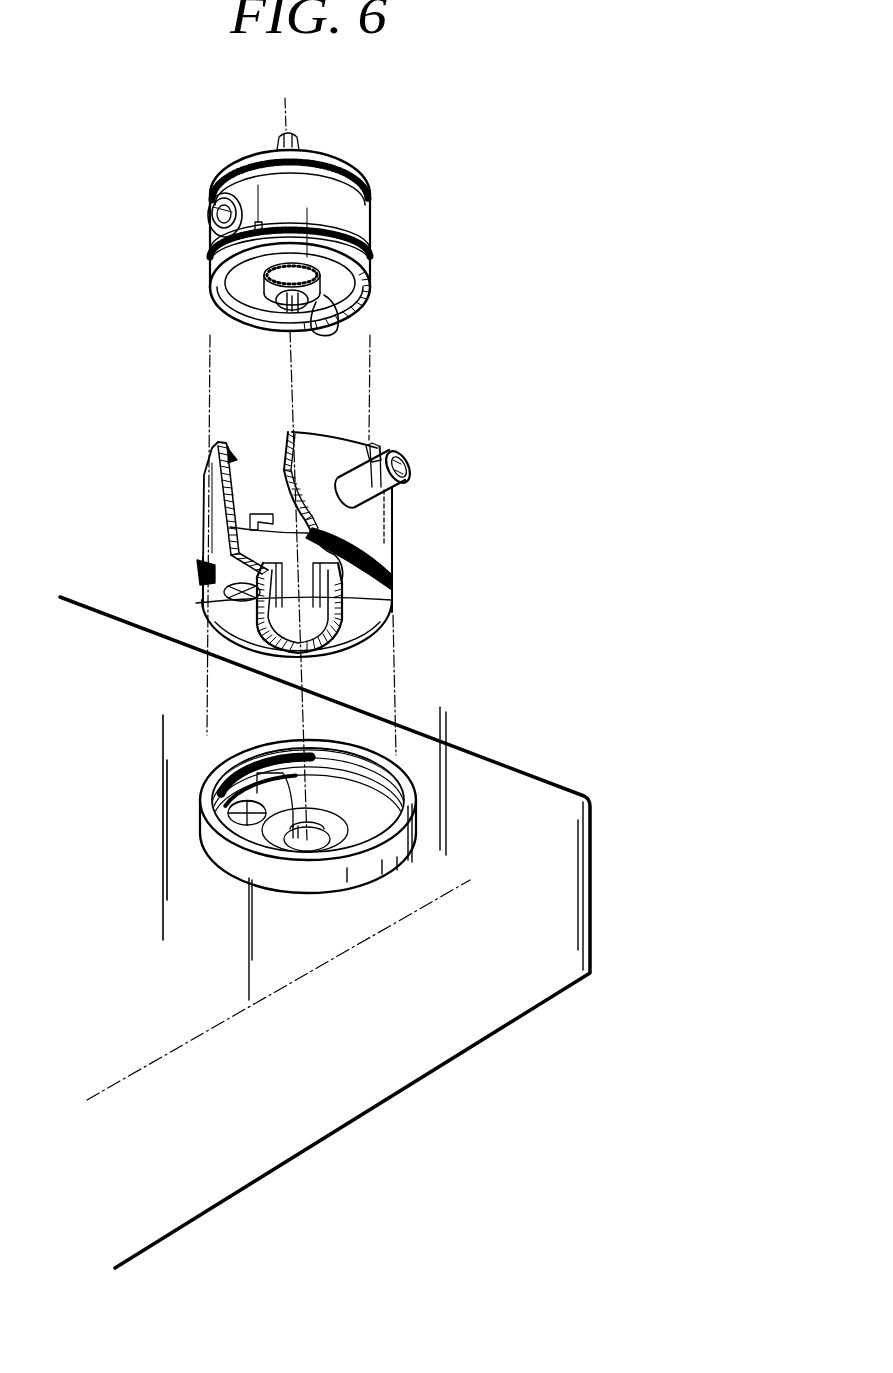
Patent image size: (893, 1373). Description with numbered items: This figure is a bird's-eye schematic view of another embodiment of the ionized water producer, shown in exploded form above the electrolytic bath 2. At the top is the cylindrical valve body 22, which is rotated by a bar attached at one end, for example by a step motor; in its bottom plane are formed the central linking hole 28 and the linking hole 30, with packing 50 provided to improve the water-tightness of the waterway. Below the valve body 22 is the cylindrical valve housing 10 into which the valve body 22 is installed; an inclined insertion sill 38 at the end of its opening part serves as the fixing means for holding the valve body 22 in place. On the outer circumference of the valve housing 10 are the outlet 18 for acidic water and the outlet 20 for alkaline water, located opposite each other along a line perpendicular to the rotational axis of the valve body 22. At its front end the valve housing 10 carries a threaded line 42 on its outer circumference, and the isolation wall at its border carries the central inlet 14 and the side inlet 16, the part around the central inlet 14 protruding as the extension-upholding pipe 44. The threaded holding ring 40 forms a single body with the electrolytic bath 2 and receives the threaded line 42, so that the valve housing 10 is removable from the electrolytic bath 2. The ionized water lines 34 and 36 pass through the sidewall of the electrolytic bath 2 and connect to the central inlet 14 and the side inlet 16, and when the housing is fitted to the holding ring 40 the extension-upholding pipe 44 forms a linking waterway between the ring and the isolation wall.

The electrolytic bath 2 is at (512, 795).
The valve housing 10 is at (397, 513).
The central inlet 14 is at (263, 645).
The side inlet 16 is at (223, 606).
The outlet for acidic water 18 is at (413, 482).
The outlet for alkaline water 20 is at (193, 567).
The valve body 22 is at (371, 221).
The central linking hole 28 is at (322, 338).
The linking hole 30 is at (300, 265).
The ionized water line 34 is at (227, 780).
The ionized water line 36 is at (207, 780).
The insertion sill 38 is at (372, 440).
The threaded holding ring 40 is at (401, 775).
The threaded line 42 is at (390, 563).
The extension-upholding pipe 44 is at (393, 603).
The packing 50 is at (213, 193).